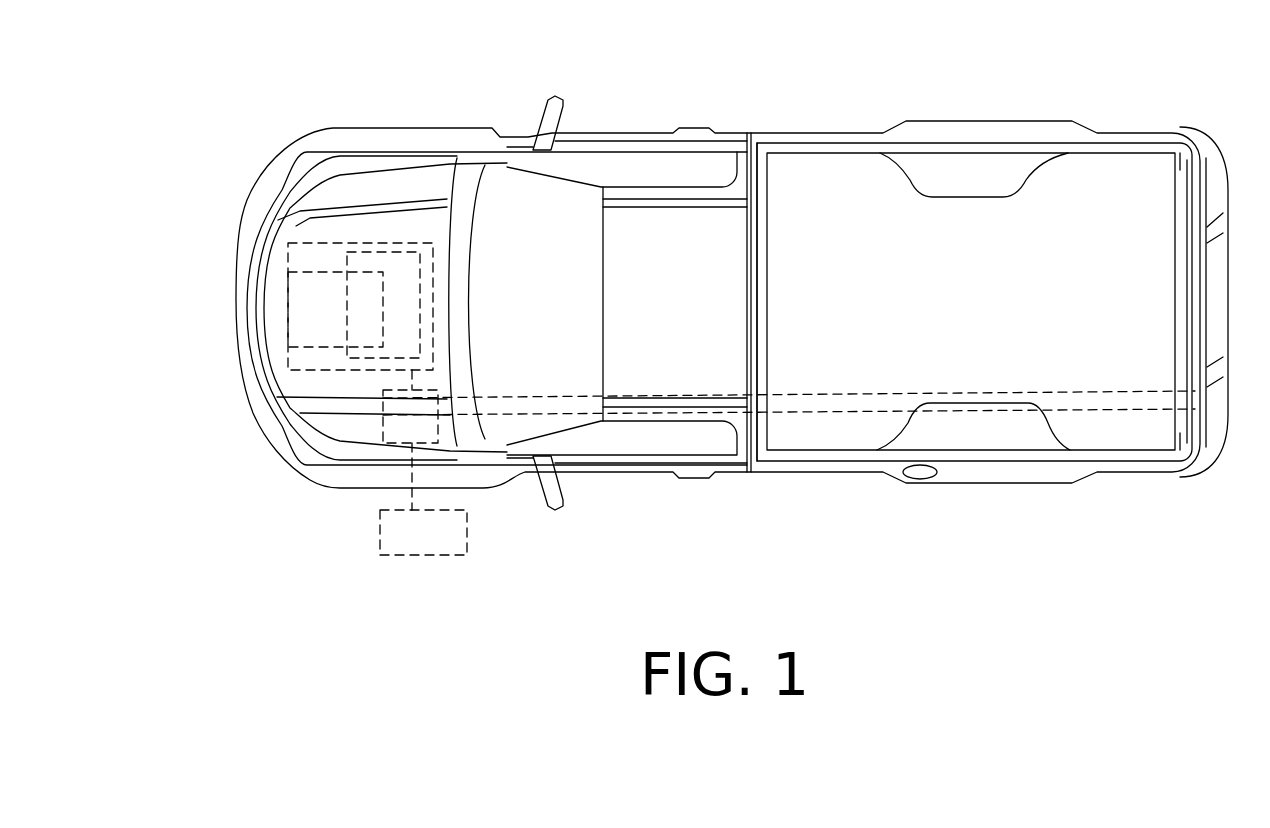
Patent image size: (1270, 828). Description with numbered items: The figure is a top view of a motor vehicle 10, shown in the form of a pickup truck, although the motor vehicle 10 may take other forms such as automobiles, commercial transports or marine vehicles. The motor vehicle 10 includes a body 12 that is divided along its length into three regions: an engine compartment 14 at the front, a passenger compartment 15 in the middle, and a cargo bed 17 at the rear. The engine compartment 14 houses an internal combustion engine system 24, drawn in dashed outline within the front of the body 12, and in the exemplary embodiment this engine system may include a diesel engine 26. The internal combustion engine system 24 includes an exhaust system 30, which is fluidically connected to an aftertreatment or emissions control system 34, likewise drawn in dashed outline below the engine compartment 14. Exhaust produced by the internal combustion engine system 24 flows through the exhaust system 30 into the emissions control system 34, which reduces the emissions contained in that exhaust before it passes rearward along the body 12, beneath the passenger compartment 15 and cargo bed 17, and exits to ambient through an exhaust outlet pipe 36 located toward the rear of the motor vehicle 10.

The motor vehicle 10 is at (997, 525).
The body 12 is at (798, 477).
The engine compartment 14 is at (387, 192).
The passenger compartment 15 is at (557, 217).
The cargo bed 17 is at (845, 200).
The internal combustion engine system 24 is at (327, 317).
The diesel engine 26 is at (280, 240).
The exhaust system 30 is at (325, 380).
The emissions control system 34 is at (373, 428).
The exhaust outlet pipe 36 is at (1103, 418).